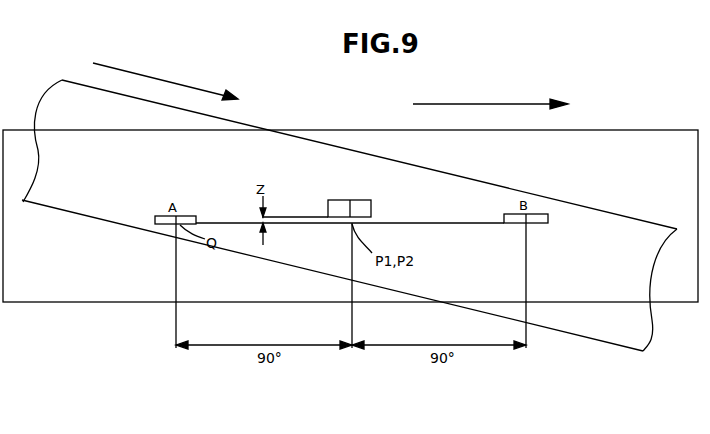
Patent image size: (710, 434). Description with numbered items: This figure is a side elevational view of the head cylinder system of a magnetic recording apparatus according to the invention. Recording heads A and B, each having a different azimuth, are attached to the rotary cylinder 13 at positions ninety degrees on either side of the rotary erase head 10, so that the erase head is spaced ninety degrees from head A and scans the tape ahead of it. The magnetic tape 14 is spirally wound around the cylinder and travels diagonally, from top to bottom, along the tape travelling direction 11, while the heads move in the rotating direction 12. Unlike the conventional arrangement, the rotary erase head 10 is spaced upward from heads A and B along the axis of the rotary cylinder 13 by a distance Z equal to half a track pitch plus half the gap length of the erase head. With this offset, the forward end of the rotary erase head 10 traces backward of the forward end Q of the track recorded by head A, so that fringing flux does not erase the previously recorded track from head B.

The rotary erase head 10 is at (372, 199).
The tape travelling direction 11 is at (210, 91).
The rotating direction of a head 12 is at (522, 103).
The rotary cylinder 13 is at (686, 142).
The magnetic tape 14 is at (646, 324).